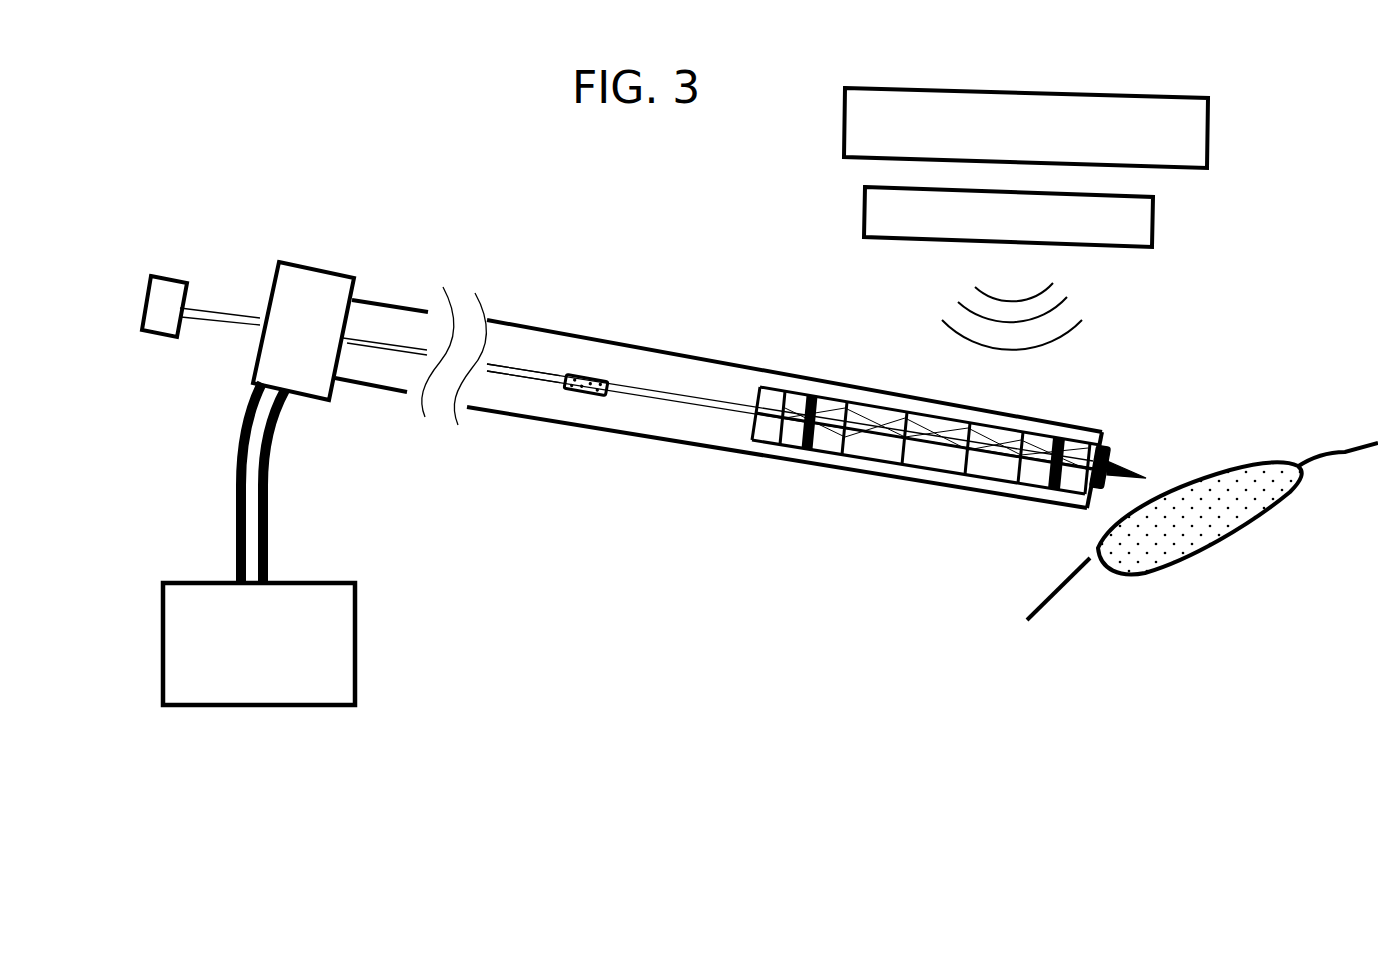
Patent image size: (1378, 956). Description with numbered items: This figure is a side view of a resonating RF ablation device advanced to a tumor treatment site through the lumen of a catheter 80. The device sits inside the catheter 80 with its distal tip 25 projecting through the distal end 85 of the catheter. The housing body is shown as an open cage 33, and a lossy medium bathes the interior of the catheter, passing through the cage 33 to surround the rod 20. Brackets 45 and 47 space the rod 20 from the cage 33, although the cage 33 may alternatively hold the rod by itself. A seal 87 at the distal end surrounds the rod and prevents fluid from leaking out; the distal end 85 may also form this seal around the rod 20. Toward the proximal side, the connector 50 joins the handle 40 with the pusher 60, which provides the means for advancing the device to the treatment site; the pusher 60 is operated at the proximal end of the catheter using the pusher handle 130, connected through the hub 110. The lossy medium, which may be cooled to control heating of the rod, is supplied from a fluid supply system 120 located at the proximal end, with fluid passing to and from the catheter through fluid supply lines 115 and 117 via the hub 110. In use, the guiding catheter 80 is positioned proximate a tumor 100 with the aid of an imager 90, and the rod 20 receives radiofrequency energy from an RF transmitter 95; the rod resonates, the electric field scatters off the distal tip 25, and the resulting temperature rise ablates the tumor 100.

The rod 20 is at (861, 489).
The distal tip 25 is at (1110, 480).
The open cage 33 is at (883, 462).
The handle 40 is at (650, 388).
The bracket 45 is at (757, 440).
The bracket 47 is at (1040, 444).
The connector 50 is at (586, 375).
The pusher 60 is at (502, 365).
The catheter 80 is at (533, 420).
The distal end 85 is at (1104, 438).
The seal 87 is at (1112, 462).
The imager 90 is at (1208, 133).
The RF transmitter 95 is at (1153, 222).
The tumor 100 is at (1220, 468).
The hub 110 is at (338, 270).
The fluid supply line 115 is at (270, 508).
The fluid supply line 117 is at (238, 477).
The fluid supply system 120 is at (355, 668).
The pusher handle 130 is at (166, 273).